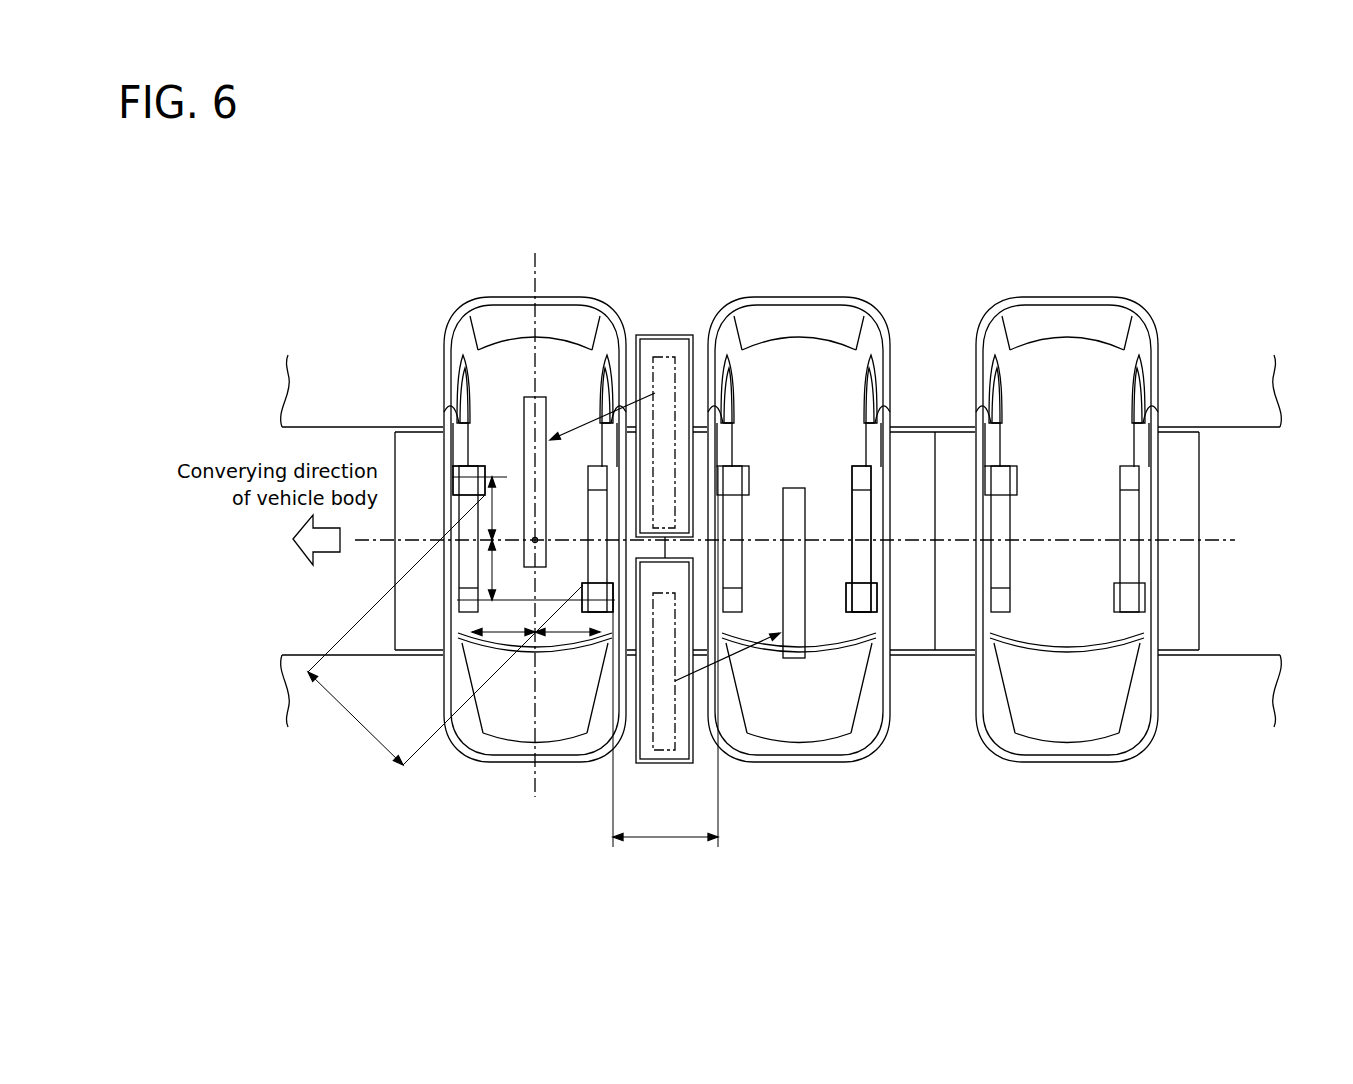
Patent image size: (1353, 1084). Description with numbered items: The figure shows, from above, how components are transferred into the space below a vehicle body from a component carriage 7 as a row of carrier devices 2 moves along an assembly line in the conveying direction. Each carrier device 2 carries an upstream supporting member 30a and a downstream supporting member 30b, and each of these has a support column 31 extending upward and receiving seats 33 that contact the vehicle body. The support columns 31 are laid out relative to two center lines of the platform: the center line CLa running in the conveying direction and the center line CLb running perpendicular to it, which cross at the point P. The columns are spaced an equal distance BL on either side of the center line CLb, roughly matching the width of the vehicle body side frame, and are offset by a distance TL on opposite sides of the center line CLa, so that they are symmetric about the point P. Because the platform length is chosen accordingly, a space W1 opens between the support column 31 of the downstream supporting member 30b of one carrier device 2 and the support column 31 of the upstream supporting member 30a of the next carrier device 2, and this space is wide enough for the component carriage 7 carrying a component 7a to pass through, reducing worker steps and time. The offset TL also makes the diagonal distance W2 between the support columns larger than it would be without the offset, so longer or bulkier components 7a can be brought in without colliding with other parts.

The carrier device 2 is at (1203, 623).
The component carriage 7 is at (663, 334).
The component 7a is at (532, 396).
The upstream supporting member 30a is at (752, 504).
The downstream supporting member 30b is at (846, 513).
The support column 31 is at (457, 477).
The receiving seat 33 is at (863, 478).
The point of intersection P is at (536, 538).
The center line extending in the conveying direction CLa is at (825, 543).
The center line extending perpendicular to the conveying direction CLb is at (534, 514).
The offset distance TL is at (533, 538).
The equal distance BL is at (536, 622).
The space W1 is at (665, 657).
The distance between support columns W2 is at (445, 630).